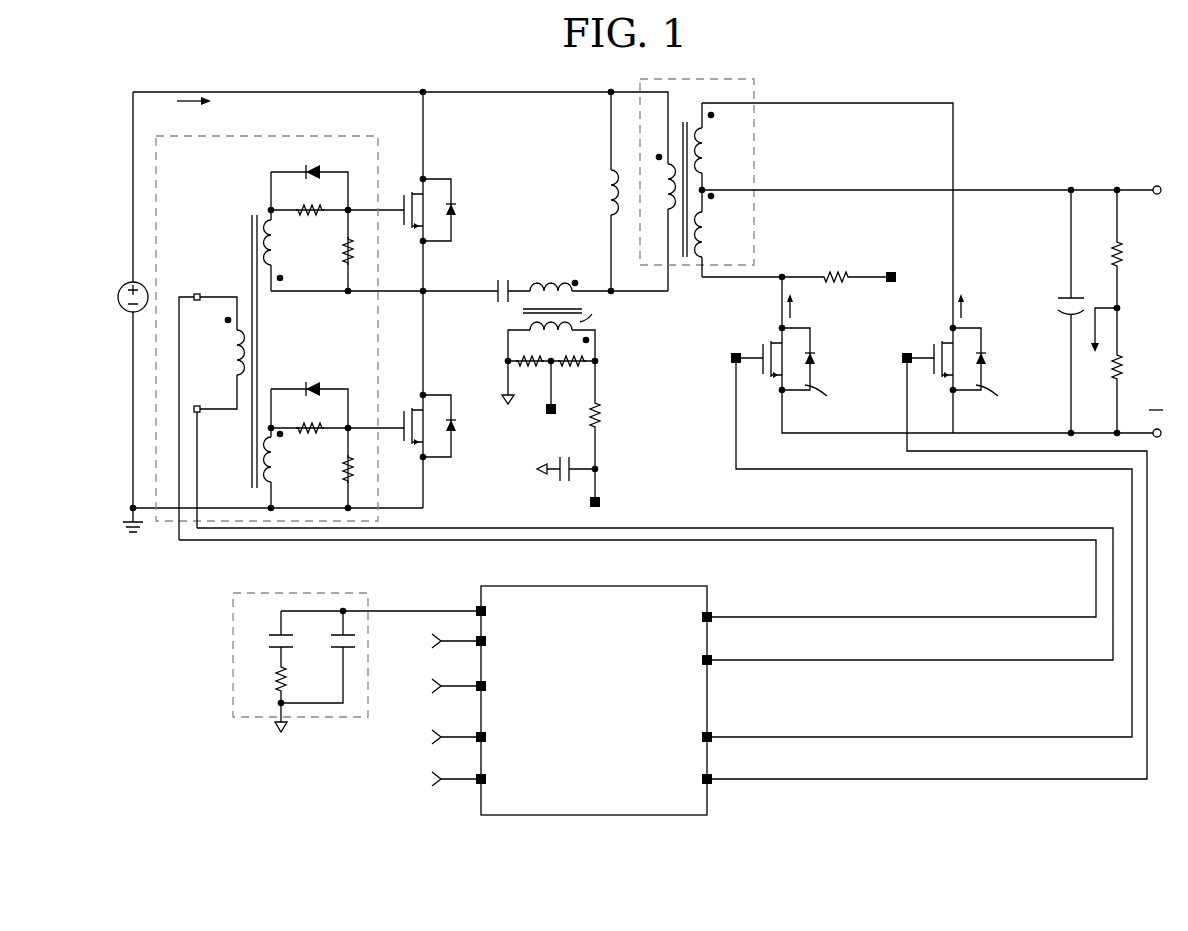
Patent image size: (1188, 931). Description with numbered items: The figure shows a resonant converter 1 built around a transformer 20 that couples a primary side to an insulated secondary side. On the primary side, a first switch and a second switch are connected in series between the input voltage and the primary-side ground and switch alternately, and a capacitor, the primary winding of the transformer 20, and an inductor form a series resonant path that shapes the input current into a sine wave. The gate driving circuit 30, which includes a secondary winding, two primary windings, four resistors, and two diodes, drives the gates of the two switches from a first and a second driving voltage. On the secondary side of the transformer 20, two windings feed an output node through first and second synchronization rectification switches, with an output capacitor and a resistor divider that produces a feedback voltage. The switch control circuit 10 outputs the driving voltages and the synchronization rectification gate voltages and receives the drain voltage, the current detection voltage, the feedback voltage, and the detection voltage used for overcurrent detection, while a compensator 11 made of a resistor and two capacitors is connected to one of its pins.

The resonant converter 1 is at (1036, 90).
The switch control circuit 10 is at (707, 805).
The compensator 11 is at (297, 593).
The transformer 20 is at (754, 82).
The gate driving circuit 30 is at (273, 136).